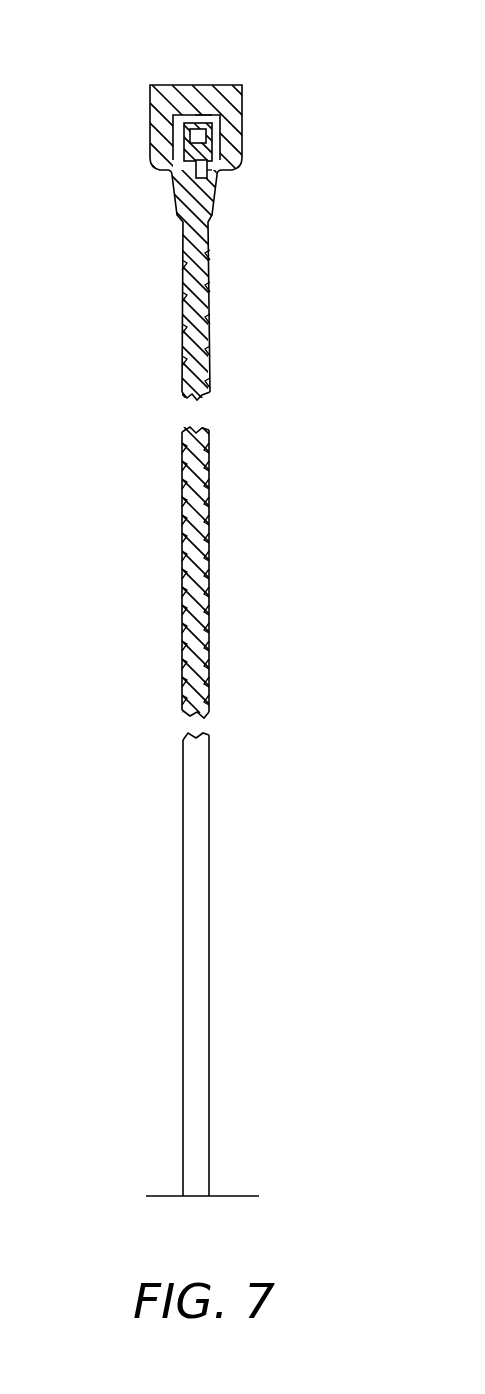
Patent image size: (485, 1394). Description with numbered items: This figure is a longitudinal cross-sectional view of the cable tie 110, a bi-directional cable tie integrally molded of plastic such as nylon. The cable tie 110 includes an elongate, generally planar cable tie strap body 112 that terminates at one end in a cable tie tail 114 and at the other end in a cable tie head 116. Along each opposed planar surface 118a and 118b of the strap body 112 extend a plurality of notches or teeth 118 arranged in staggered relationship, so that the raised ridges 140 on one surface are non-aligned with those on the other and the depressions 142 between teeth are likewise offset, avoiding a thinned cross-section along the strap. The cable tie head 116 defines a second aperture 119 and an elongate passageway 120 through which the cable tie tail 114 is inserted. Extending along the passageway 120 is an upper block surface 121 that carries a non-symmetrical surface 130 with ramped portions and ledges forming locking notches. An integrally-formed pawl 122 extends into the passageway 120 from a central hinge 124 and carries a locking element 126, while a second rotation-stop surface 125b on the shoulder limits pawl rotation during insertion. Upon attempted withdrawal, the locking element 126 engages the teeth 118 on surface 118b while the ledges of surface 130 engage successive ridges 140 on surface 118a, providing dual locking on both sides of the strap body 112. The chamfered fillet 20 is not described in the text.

The cavity 20 is at (230, 123).
The cable tie 110 is at (220, 345).
The cable tie strap body 112 is at (210, 712).
The cable tie tail 114 is at (210, 1116).
The cable tie head 116 is at (230, 97).
The teeth 118 is at (210, 540).
The planar surface 118a is at (210, 566).
The planar surface 118b is at (183, 660).
The second aperture 119 is at (183, 497).
The passageway 120 is at (205, 118).
The block surface 121 is at (160, 108).
The pawl 122 is at (210, 135).
The central hinge 124 is at (180, 172).
The second rotation-stop surface 125b is at (215, 175).
The locking element 126 is at (190, 134).
The non-symmetrical surface 130 is at (188, 132).
The ridges 140 is at (183, 556).
The depressions 142 is at (183, 572).